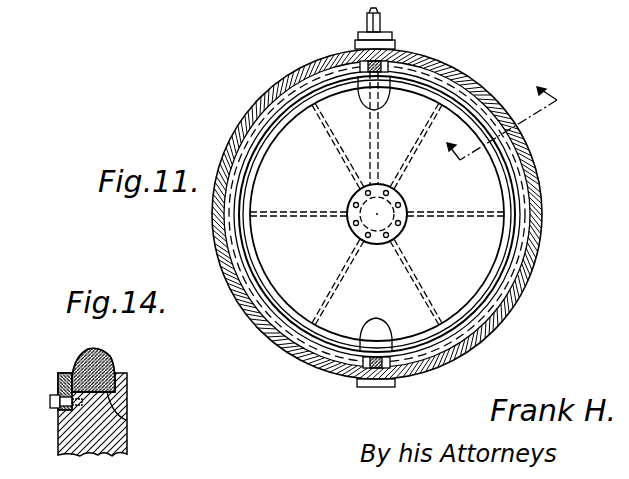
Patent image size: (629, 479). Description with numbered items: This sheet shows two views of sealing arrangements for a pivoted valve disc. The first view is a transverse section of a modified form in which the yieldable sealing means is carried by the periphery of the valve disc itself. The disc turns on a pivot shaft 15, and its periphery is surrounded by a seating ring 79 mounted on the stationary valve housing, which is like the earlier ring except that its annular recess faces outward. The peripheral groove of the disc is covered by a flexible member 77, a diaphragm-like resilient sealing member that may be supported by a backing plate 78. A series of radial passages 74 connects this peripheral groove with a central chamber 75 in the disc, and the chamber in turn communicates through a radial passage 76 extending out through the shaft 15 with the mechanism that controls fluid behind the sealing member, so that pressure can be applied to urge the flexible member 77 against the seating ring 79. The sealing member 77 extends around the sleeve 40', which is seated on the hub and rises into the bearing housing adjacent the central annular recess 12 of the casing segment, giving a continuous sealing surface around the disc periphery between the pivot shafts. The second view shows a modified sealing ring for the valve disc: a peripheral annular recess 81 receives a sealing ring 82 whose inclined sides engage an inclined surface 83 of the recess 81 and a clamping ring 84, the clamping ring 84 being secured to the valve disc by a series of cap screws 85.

In FIG. 11, the shaft 15 is at (367, 26).
In FIG. 11, the radial passage 76 is at (380, 22).
In FIG. 11, the sleeve 40' is at (414, 209).
In FIG. 11, the seating ring 79 is at (272, 111).
In FIG. 11, the central annular recess 12 is at (509, 137).
In FIG. 11, the backing plate 78 is at (511, 196).
In FIG. 11, the flexible member 77 is at (516, 225).
In FIG. 11, the radial passages 74 is at (293, 216).
In FIG. 11, the central chamber 75 is at (392, 229).
In FIG. 14, the peripheral annular recess 81 is at (128, 415).
In FIG. 14, the sealing ring 82 is at (110, 360).
In FIG. 14, the inclined surface 83 is at (116, 388).
In FIG. 14, the clamping ring 84 is at (63, 377).
In FIG. 14, the cap screws 85 is at (53, 408).